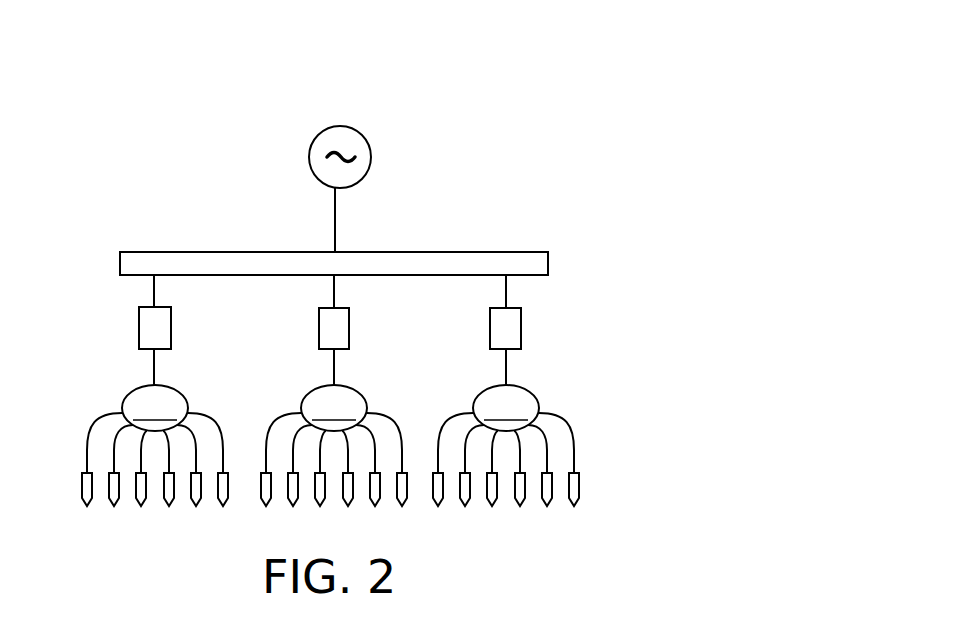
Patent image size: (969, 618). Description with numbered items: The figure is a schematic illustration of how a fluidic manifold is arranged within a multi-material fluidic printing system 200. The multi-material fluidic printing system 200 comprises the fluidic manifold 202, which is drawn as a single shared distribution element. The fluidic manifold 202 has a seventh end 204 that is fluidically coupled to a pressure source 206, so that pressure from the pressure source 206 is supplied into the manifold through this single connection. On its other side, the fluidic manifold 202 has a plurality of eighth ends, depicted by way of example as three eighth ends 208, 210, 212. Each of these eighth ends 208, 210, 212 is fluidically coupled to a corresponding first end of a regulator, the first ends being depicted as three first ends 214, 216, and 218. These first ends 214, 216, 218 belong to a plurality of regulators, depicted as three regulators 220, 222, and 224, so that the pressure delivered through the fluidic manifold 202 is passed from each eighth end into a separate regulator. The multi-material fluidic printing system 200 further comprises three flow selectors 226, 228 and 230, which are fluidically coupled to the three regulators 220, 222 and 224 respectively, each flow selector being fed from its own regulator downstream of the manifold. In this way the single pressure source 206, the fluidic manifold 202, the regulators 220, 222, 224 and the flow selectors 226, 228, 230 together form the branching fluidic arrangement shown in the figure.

The multi-material fluidic printing system 200 is at (562, 55).
The fluidic manifold 202 is at (382, 243).
The seventh end 204 is at (381, 220).
The pressure source 206 is at (389, 152).
The eighth end 208 is at (109, 300).
The eighth end 210 is at (293, 300).
The eighth end 212 is at (463, 300).
The first end 214 is at (200, 292).
The first end 216 is at (379, 292).
The first end 218 is at (552, 293).
The regulator 220 is at (109, 341).
The regulator 222 is at (288, 342).
The regulator 224 is at (459, 342).
The flow selector 226 is at (155, 427).
The flow selector 228 is at (334, 427).
The flow selector 230 is at (506, 427).